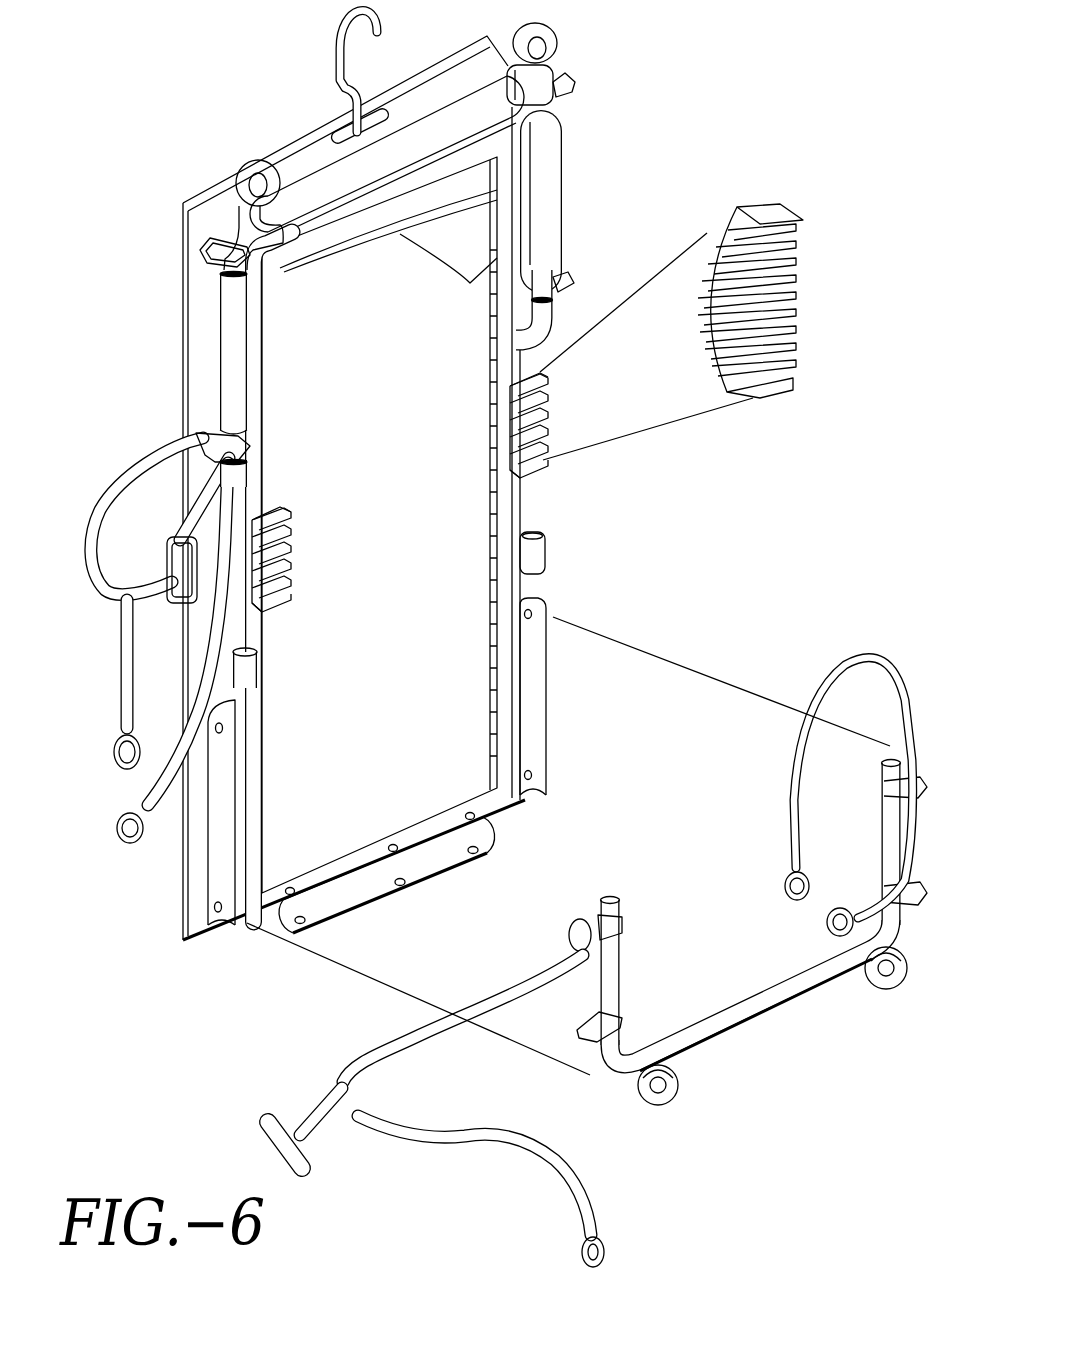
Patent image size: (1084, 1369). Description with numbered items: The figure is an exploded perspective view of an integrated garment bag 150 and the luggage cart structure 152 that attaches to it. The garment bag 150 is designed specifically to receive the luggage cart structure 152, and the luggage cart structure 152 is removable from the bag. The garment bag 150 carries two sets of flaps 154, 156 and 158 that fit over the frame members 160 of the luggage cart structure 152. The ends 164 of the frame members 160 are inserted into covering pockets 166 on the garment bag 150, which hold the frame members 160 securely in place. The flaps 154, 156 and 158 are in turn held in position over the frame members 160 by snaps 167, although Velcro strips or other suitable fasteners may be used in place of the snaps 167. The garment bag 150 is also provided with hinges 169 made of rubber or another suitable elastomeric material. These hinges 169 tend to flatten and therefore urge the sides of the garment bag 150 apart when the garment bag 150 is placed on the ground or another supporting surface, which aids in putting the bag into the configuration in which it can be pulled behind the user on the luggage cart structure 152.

The garment bag 150 is at (150, 262).
The luggage cart structure 152 is at (820, 1030).
The flap 154 is at (545, 173).
The flap 156 is at (442, 120).
The flap 158 is at (238, 351).
The frame member 160 is at (535, 697).
The end of frame member 164 is at (240, 228).
The covering pocket 166 is at (236, 468).
The snap 167 is at (215, 907).
The elastomeric material hinge 169 is at (290, 548).